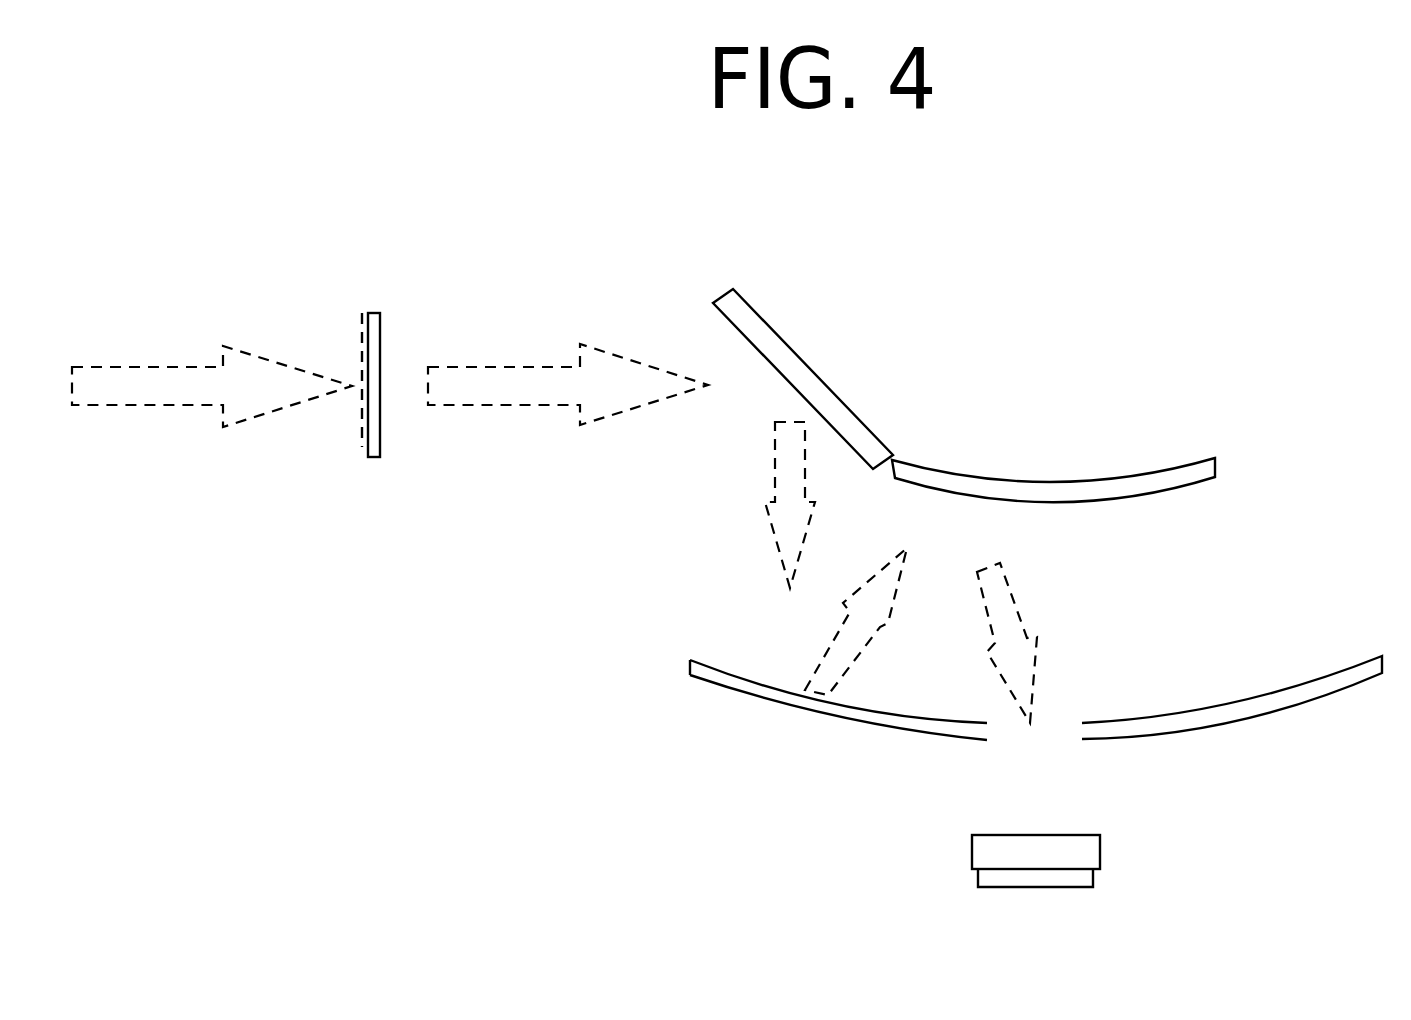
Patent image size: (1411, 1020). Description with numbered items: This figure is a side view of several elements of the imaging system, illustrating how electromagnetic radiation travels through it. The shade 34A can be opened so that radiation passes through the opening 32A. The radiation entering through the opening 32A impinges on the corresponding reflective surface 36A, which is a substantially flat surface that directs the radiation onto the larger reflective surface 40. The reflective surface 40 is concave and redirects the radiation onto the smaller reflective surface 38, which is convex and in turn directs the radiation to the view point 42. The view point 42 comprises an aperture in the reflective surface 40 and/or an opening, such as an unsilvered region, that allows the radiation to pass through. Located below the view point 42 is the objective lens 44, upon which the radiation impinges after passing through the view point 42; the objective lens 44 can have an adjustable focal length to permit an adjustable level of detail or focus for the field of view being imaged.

The opening 32A is at (358, 335).
The shade 34A is at (382, 335).
The reflective surface 36A is at (822, 378).
The reflective surface 38 is at (990, 480).
The reflective surface 40 is at (812, 715).
The view point 42 is at (1066, 751).
The objective lens 44 is at (970, 855).